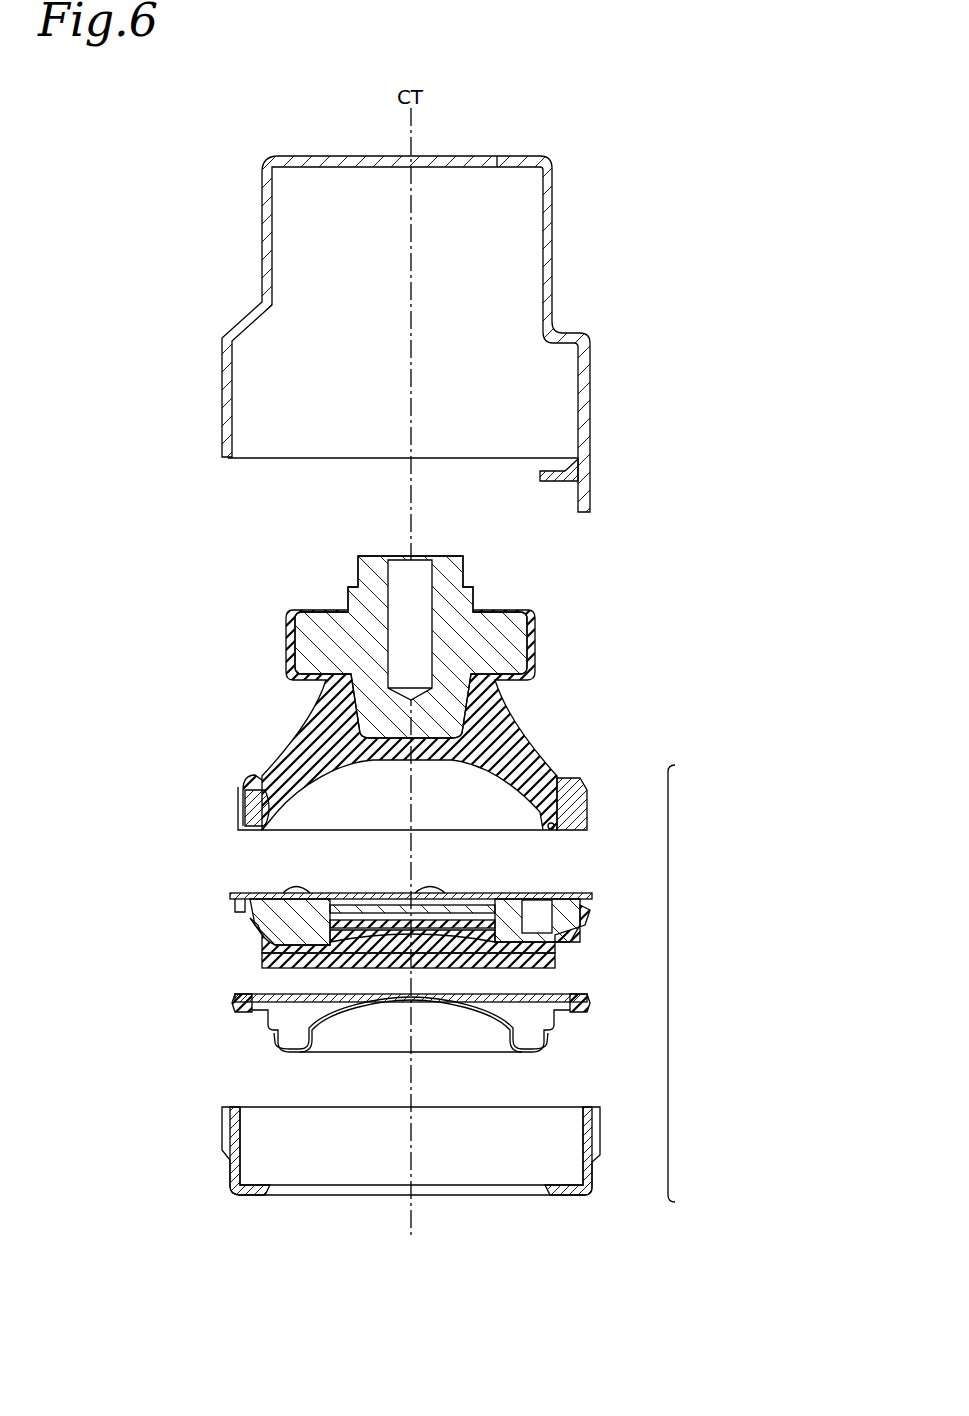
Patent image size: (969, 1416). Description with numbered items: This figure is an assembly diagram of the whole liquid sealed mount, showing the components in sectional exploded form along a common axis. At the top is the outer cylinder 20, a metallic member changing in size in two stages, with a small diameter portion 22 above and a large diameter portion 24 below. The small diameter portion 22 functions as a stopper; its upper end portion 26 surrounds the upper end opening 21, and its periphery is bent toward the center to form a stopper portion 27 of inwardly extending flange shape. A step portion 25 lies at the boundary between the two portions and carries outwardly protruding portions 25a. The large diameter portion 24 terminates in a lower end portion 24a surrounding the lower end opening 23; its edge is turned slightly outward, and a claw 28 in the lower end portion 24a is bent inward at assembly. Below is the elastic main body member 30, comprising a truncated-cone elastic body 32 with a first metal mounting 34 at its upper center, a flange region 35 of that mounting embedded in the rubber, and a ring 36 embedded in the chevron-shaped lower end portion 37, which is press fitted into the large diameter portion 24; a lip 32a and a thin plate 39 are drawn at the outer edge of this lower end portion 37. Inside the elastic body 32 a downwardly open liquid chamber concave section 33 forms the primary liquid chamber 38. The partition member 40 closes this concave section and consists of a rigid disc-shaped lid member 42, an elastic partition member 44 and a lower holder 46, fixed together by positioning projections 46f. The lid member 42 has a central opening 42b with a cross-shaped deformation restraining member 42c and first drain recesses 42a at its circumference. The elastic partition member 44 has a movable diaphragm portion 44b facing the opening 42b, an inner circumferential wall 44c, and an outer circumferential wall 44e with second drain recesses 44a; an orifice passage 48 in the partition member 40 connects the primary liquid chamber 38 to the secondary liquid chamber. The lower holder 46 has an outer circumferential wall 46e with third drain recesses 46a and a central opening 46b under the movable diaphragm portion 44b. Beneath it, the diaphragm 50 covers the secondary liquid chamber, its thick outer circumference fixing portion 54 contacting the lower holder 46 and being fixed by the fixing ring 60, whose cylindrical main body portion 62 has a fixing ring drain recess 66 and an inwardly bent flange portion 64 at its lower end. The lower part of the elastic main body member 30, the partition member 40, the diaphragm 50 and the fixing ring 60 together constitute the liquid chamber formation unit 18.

The liquid chamber formation unit 18 is at (668, 985).
The outer cylinder 20 is at (404, 298).
The upper end opening 21 is at (460, 160).
The small diameter portion 22 is at (553, 229).
The lower end opening 23 is at (311, 460).
The large diameter portion 24 is at (591, 364).
The lower end portion 24a is at (223, 456).
The step portion 25 is at (566, 330).
The protruding portion 25a is at (246, 314).
The upper end portion 26 is at (276, 158).
The stopper portion 27 is at (517, 160).
The claw 28 is at (568, 478).
The elastic main body member 30 is at (400, 675).
The elastic body 32 is at (503, 730).
The lip of elastic body 32a is at (243, 779).
The liquid chamber concave section 33 is at (472, 778).
The first metal mounting 34 is at (459, 577).
The flange portion of inner member 35 is at (449, 629).
The ring 36 is at (586, 801).
The lower end portion 37 is at (258, 776).
The primary liquid chamber 38 is at (375, 812).
The thin plate portion 39 is at (237, 806).
The partition member 40 is at (371, 916).
The lid member 42 is at (373, 876).
The partition member first drain recess 42a is at (247, 896).
The opening 42b is at (429, 893).
The deformation restraining member 42c is at (342, 893).
The elastic partition member 44 is at (400, 895).
The partition member second drain recess 44a is at (263, 905).
The movable diaphragm portion 44b is at (380, 912).
The inner circumferential wall 44c is at (479, 913).
The outer circumferential wall 44e is at (581, 916).
The lower holder 46 is at (395, 927).
The partition member third drain recess 46a is at (266, 960).
The opening 46b is at (356, 950).
The outer circumferential wall 46e is at (566, 950).
The positioning projection 46f is at (321, 920).
The orifice passage 48 is at (536, 916).
The diaphragm 50 is at (408, 1030).
The thick outer circumference fixing portion 54 is at (586, 1011).
The fixing ring 60 is at (403, 1181).
The cylindrical main body portion 62 is at (591, 1118).
The flange portion 64 is at (263, 1197).
The fixing ring drain recess 66 is at (236, 1123).